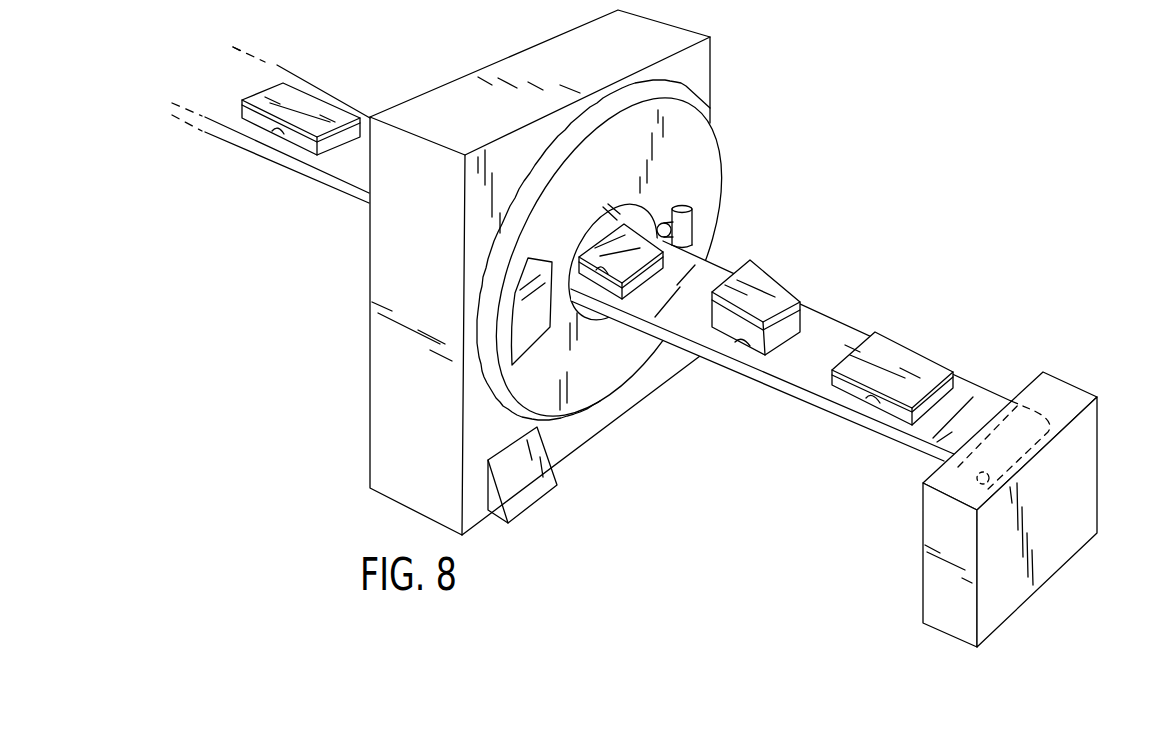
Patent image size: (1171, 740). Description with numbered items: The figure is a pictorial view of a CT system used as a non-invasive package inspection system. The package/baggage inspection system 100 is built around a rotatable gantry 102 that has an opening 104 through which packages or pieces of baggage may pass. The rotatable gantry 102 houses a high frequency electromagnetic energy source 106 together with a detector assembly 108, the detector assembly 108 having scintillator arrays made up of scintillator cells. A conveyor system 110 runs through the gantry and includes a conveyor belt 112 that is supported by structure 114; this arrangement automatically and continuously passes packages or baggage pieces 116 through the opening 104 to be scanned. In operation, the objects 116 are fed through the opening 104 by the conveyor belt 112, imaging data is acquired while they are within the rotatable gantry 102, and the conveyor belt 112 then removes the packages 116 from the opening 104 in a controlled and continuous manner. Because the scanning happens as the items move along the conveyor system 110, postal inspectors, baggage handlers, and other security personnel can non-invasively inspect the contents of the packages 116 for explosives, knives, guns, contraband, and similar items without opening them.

The package/baggage inspection system 100 is at (925, 172).
The rotatable gantry 102 is at (673, 155).
The opening 104 is at (627, 212).
The high frequency electromagnetic energy source 106 is at (692, 223).
The detector assembly 108 is at (528, 342).
The conveyor system 110 is at (167, 139).
The conveyor belt 112 is at (332, 170).
The structure 114 is at (1087, 478).
The packages or baggage pieces 116 is at (313, 103).